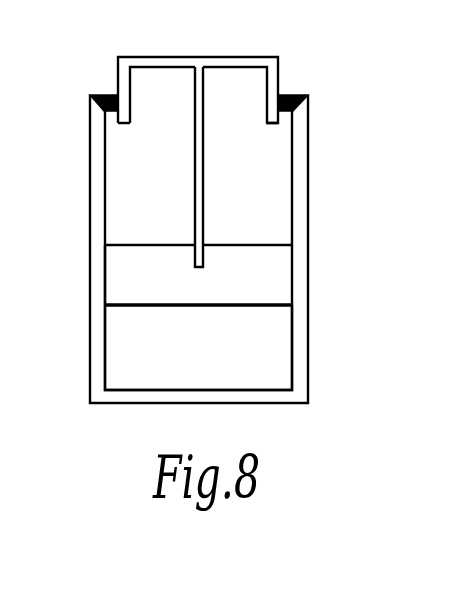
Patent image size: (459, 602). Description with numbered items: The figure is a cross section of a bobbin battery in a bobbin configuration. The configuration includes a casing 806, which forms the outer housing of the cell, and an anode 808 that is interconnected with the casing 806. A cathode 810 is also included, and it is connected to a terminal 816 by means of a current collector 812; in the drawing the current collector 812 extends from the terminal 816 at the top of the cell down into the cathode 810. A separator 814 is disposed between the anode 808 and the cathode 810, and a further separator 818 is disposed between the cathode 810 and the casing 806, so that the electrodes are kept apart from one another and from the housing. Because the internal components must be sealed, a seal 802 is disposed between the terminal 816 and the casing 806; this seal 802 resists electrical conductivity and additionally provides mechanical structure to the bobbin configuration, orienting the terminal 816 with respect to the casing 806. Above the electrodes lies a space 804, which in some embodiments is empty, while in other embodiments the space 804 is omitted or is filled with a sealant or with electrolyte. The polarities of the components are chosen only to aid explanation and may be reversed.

The seal 802 is at (293, 96).
The space 804 is at (267, 152).
The casing 806 is at (308, 190).
The anode 808 is at (277, 355).
The cathode 810 is at (265, 275).
The current collector 812 is at (195, 167).
The separator 814 is at (198, 307).
The terminal 816 is at (198, 56).
The separator 818 is at (108, 273).